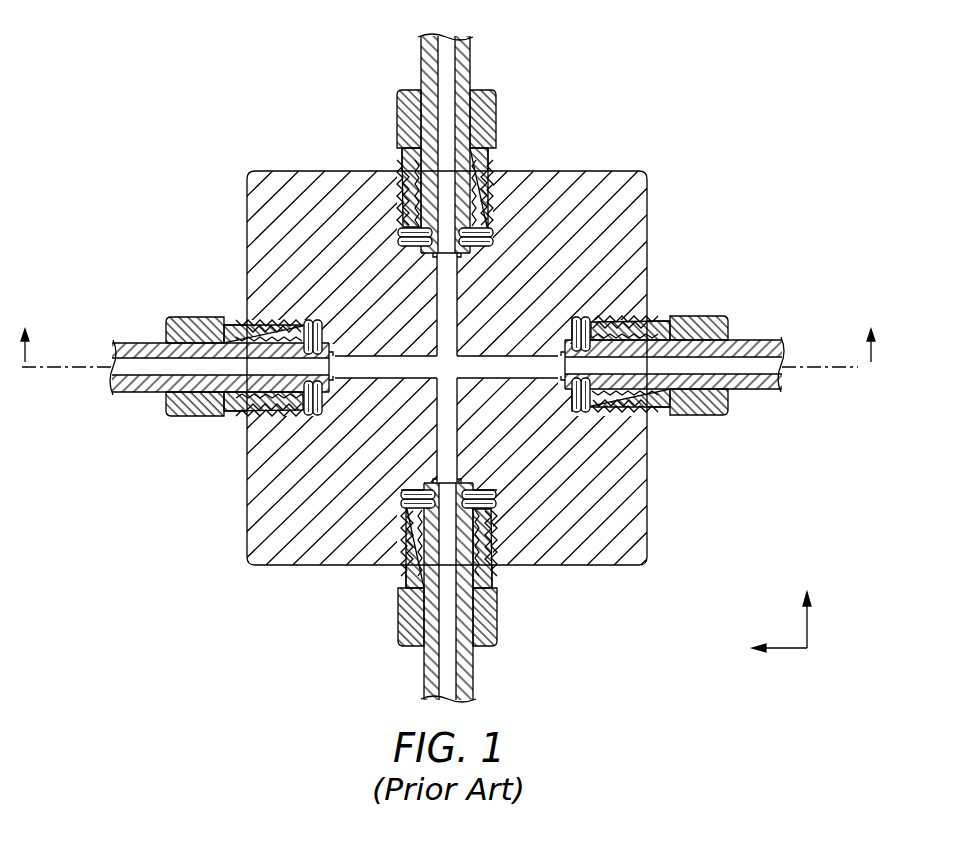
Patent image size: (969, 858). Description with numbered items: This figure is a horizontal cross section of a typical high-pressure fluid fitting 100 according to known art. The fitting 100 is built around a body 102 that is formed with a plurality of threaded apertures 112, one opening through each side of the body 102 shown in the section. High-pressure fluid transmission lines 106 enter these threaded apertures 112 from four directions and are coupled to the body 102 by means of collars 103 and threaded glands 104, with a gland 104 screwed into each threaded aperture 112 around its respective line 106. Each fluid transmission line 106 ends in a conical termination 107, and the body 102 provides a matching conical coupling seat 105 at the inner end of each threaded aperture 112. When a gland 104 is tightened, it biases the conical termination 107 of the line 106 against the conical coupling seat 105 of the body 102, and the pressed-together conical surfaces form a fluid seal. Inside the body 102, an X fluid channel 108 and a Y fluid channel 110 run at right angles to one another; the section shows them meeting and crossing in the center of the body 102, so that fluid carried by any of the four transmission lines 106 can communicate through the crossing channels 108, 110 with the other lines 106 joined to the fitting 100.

The fitting 100 is at (251, 60).
The body 102 is at (258, 222).
The collar 103 is at (478, 160).
The gland 104 is at (490, 122).
The conical coupling seat 105 is at (452, 240).
The high-pressure fluid transmission line 106 is at (462, 64).
The conical termination 107 is at (430, 238).
The X fluid channel 108 is at (517, 365).
The Y fluid channel 110 is at (448, 298).
The threaded aperture 112 is at (578, 405).